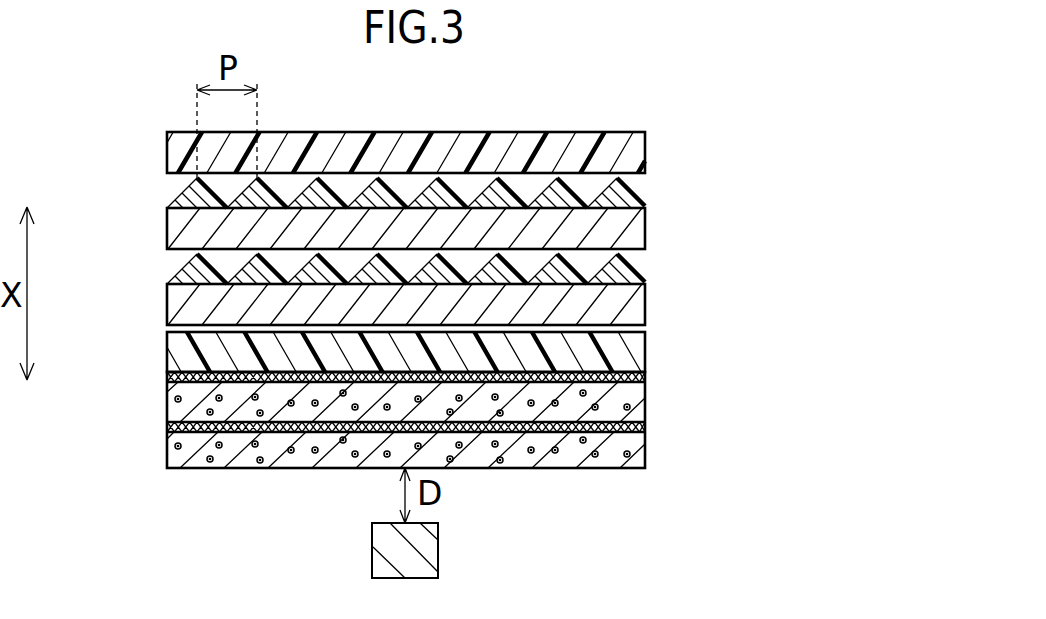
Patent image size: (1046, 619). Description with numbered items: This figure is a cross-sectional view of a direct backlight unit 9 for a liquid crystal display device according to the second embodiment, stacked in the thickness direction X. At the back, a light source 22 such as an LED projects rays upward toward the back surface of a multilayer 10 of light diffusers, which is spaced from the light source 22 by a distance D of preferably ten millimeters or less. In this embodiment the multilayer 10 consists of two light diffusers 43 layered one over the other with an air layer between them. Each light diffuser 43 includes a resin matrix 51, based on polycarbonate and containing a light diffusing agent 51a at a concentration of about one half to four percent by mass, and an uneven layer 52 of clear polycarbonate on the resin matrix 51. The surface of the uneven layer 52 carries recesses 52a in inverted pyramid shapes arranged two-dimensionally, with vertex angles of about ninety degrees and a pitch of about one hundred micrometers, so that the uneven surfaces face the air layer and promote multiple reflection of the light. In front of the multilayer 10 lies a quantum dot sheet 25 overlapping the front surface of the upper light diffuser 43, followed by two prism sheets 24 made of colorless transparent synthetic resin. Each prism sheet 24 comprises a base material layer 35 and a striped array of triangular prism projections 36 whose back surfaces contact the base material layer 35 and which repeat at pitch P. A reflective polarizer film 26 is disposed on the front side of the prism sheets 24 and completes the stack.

The direct backlight unit 9 is at (612, 96).
The reflective polarizer film 26 is at (635, 143).
The prism sheet 24 is at (402, 247).
The prism projection 36 is at (184, 195).
The base material layer 35 is at (172, 225).
The quantum dot sheet 25 is at (635, 347).
The multilayer 10 is at (426, 431).
The light diffuser 43 is at (397, 431).
The uneven layer 52 is at (180, 373).
The recess 52a is at (278, 428).
The resin matrix 51 is at (360, 448).
The light diffusing agent 51a is at (626, 458).
The light source 22 is at (425, 549).